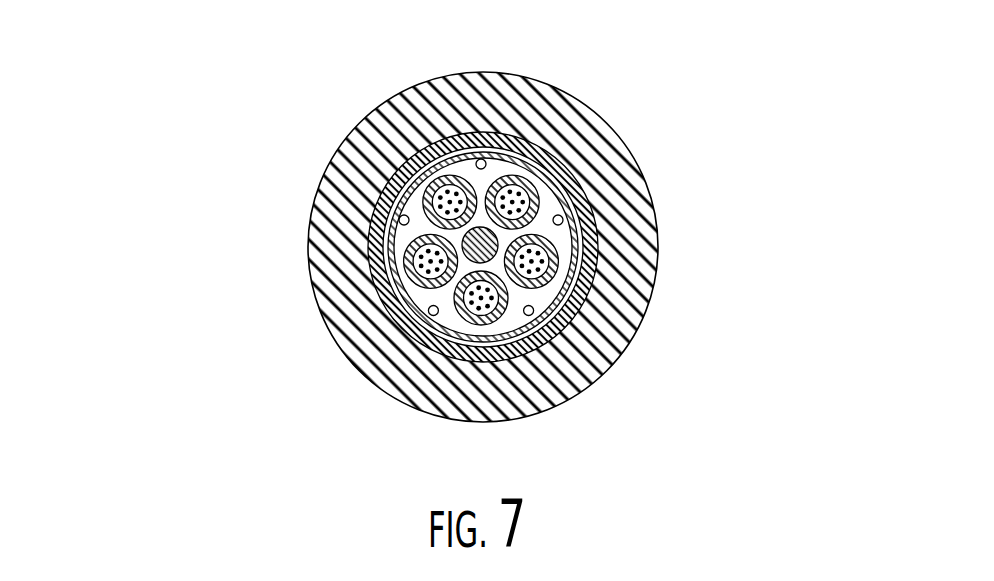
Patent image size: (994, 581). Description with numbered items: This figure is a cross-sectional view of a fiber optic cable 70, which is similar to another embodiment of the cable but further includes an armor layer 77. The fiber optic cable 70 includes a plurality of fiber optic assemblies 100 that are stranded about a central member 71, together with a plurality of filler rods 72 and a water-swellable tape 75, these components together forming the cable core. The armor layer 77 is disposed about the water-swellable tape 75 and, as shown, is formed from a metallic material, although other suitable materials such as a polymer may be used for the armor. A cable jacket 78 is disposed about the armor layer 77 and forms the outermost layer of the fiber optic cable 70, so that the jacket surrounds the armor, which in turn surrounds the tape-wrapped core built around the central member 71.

The fiber optic cable 70 is at (112, 120).
The central member 71 is at (546, 222).
The filler rods 72 is at (525, 165).
The water-swellable tape 75 is at (463, 350).
The armor layer 77 is at (520, 135).
The cable jacket 78 is at (318, 265).
The fiber optic assemblies 100 is at (378, 160).